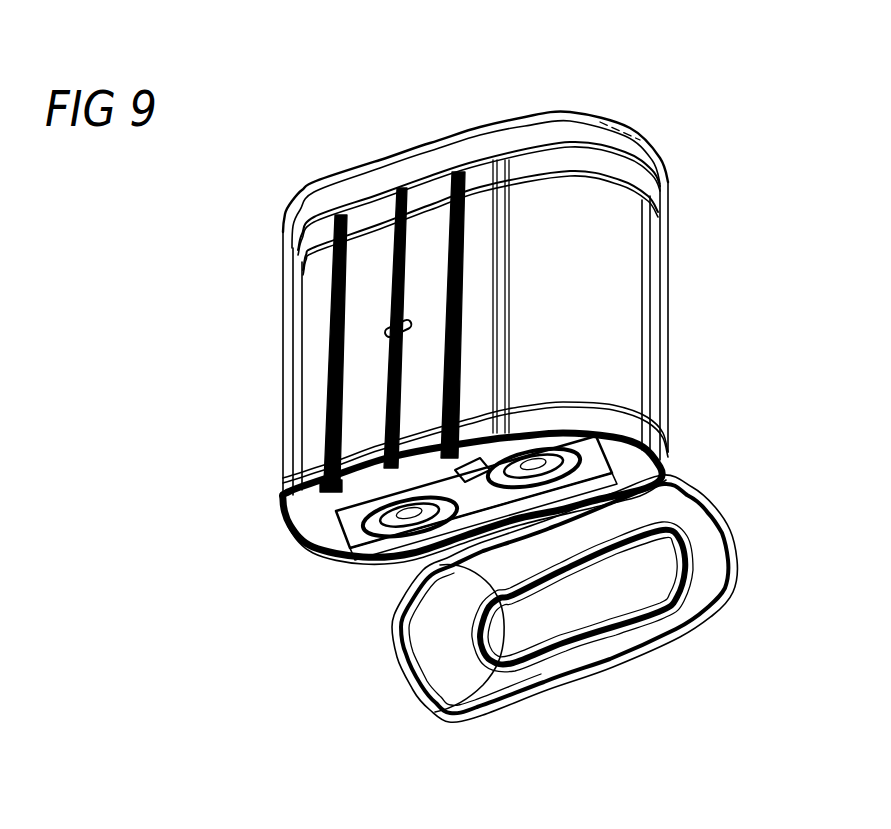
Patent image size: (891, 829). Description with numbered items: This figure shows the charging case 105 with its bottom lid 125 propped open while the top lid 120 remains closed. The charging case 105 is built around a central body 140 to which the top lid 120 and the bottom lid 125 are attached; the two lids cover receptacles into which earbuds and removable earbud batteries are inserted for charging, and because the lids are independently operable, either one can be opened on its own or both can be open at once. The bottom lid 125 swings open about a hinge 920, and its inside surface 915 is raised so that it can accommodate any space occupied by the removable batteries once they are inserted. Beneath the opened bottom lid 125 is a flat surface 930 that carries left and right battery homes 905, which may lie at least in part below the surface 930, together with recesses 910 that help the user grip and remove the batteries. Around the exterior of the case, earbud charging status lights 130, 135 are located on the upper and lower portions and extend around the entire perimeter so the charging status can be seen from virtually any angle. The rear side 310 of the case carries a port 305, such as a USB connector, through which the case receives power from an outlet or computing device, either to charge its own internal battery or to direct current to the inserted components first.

The charging case 105 is at (757, 77).
The top lid 120 is at (590, 110).
The bottom lid 125 is at (550, 698).
The earbud charging status light 130 is at (670, 198).
The earbud charging status light 135 is at (645, 405).
The central body 140 is at (671, 284).
The port 305 is at (383, 327).
The rear side 310 is at (392, 462).
The battery homes 905 is at (340, 516).
The recesses 910 is at (400, 522).
The inside surface 915 is at (612, 617).
The hinge 920 is at (472, 548).
The flat surface 930 is at (473, 470).